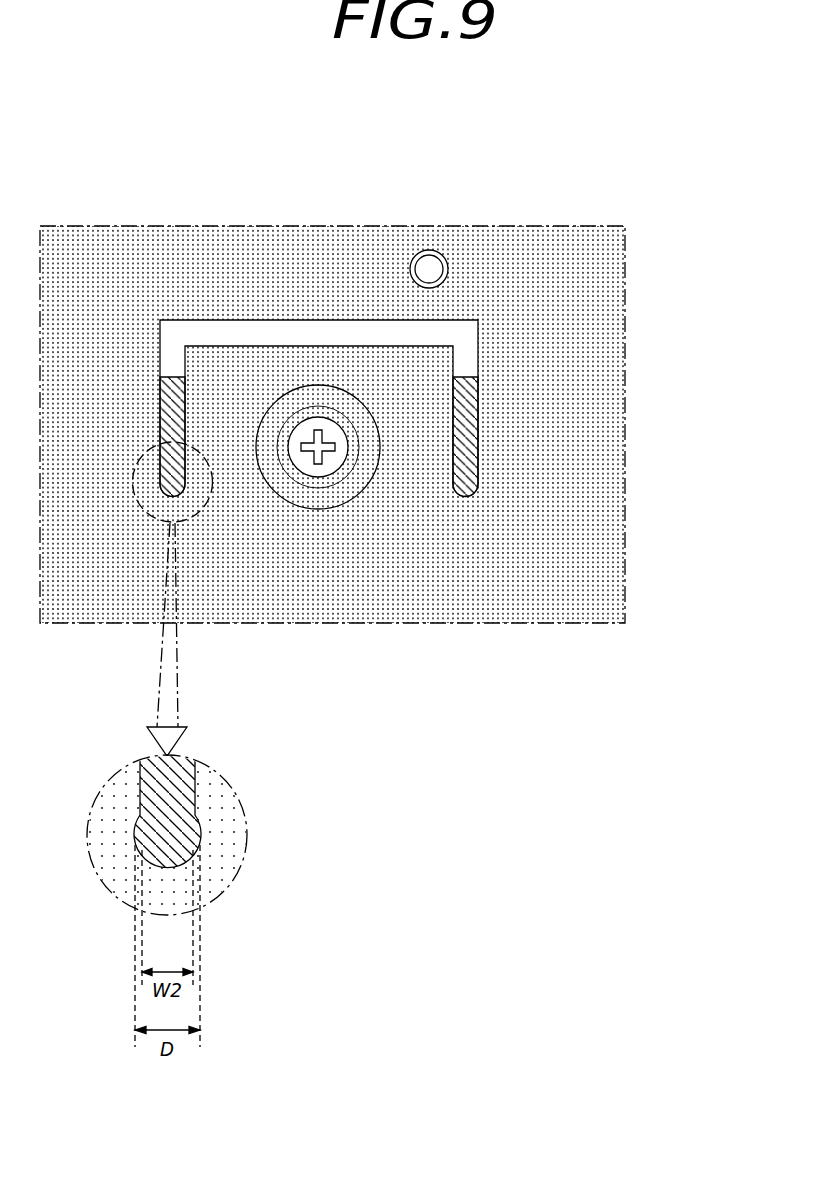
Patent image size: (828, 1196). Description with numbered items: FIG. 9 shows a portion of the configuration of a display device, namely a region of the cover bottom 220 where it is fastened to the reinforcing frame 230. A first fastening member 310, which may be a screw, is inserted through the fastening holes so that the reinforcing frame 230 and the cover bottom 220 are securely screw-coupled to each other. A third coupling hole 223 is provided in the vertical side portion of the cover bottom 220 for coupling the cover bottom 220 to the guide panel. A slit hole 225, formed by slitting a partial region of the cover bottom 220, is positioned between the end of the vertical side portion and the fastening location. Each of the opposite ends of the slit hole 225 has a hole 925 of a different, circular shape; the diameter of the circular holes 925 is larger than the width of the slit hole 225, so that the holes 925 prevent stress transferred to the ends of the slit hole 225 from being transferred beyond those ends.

The cover bottom 220 is at (604, 292).
The third coupling hole 223 is at (440, 265).
The slit hole 225 is at (243, 329).
The reinforcing frame 230 is at (430, 357).
The first fastening member 310 is at (307, 465).
The hole 925 is at (465, 486).